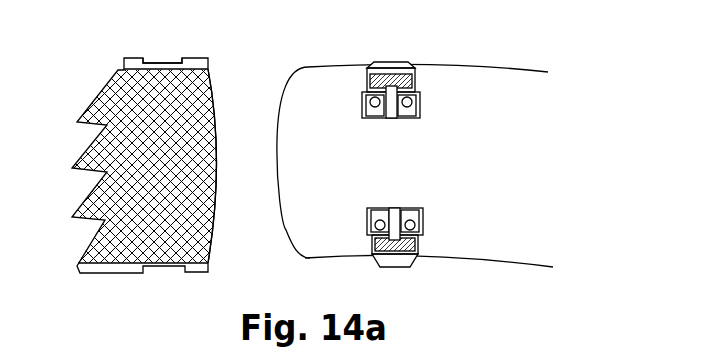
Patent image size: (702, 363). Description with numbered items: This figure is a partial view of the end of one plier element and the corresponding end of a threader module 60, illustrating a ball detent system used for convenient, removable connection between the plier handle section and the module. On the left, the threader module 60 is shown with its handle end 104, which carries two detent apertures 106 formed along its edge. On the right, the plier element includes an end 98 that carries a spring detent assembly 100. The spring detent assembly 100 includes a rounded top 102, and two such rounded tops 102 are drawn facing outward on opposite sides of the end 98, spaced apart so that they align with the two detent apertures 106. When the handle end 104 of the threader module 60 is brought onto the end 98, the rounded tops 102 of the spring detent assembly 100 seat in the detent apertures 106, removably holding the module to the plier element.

The threader module 60 is at (135, 57).
The detent apertures 106 is at (163, 57).
The handle end 104 is at (217, 110).
The end 98 is at (285, 223).
The spring detent assembly 100 is at (392, 126).
The rounded top 102 is at (388, 64).